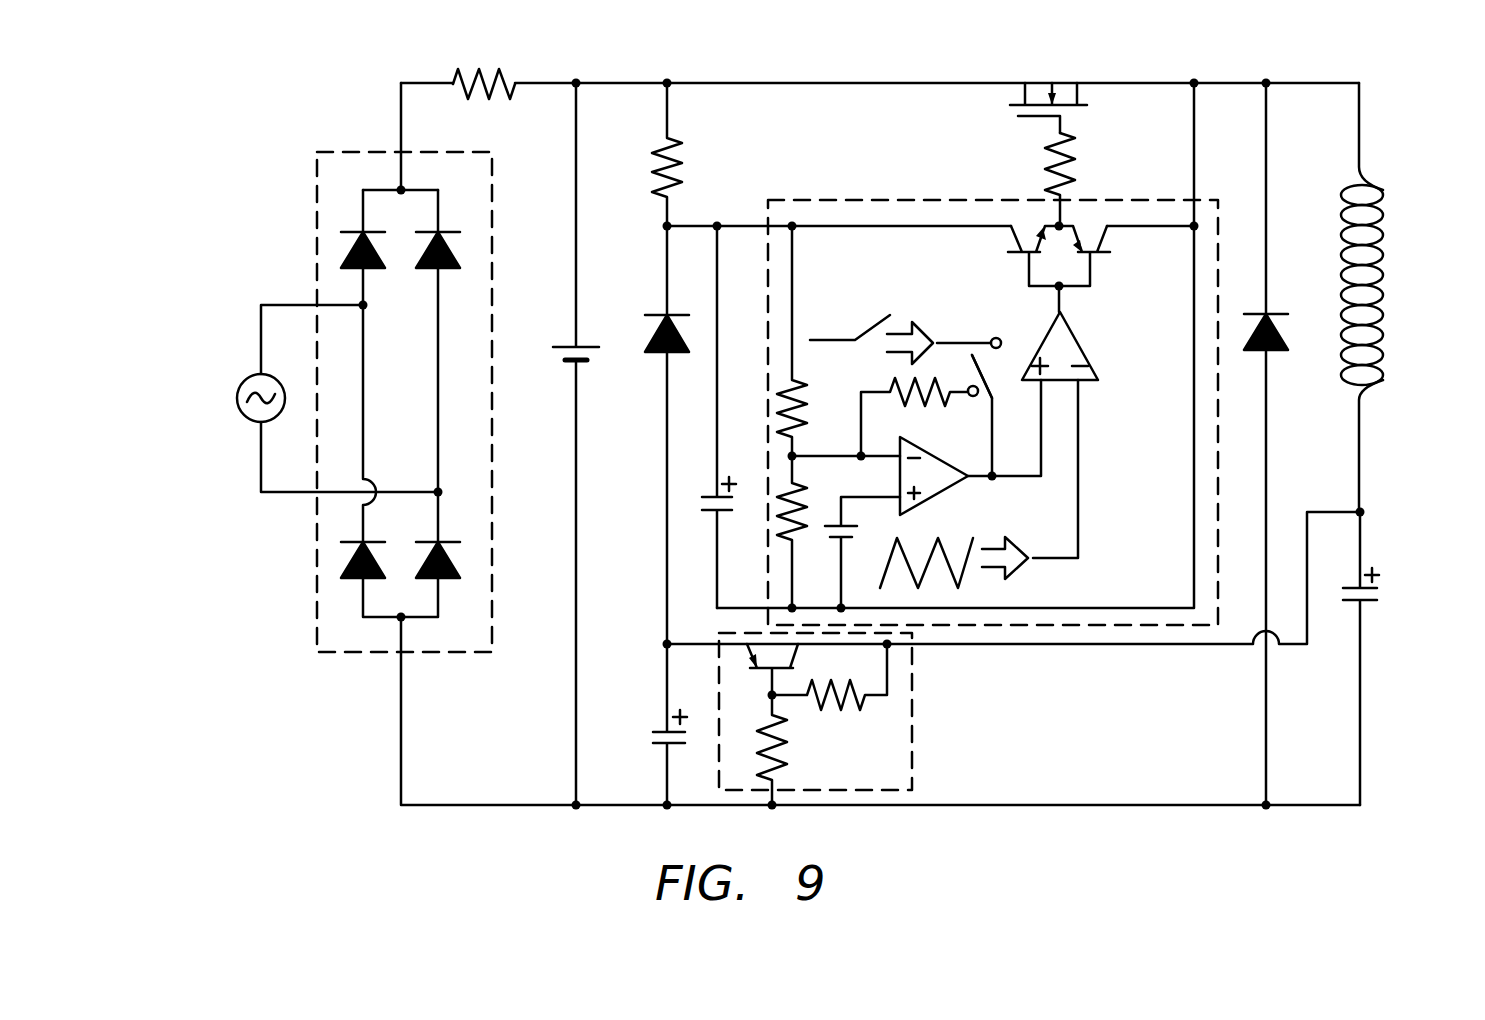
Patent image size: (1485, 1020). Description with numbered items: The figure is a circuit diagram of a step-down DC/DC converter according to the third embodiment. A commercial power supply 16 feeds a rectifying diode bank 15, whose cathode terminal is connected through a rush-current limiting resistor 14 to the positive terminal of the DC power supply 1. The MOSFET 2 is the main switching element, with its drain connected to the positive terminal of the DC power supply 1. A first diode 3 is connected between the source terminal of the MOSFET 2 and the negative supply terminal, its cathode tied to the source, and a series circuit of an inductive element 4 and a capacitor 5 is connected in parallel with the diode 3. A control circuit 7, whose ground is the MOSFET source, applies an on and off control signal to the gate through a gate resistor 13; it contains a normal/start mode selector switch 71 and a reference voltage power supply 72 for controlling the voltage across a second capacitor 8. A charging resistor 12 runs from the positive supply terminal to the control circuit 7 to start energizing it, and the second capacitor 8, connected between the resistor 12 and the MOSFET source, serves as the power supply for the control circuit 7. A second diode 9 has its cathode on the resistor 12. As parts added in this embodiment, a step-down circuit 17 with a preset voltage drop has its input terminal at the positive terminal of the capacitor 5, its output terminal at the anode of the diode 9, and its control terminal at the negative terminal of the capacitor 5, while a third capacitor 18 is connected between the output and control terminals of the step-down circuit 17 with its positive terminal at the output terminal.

The DC power supply 1 is at (556, 346).
The MOSFET 2 is at (1064, 78).
The first diode 3 is at (1283, 335).
The inductive element 4 is at (1383, 225).
The capacitor 5 is at (1372, 605).
The control circuit 7 is at (880, 200).
The second capacitor 8 is at (710, 508).
The second diode 9 is at (660, 313).
The charging resistor 12 is at (676, 138).
The gate resistor 13 is at (1045, 163).
The rush-current limiting resistor 14 is at (480, 70).
The rectifying diode bank 15 is at (313, 593).
The commercial power supply 16 is at (250, 425).
The step-down circuit 17 is at (920, 726).
The third capacitor 18 is at (660, 748).
The normal/start mode selector switch 71 is at (985, 375).
The reference voltage power supply 72 is at (822, 525).